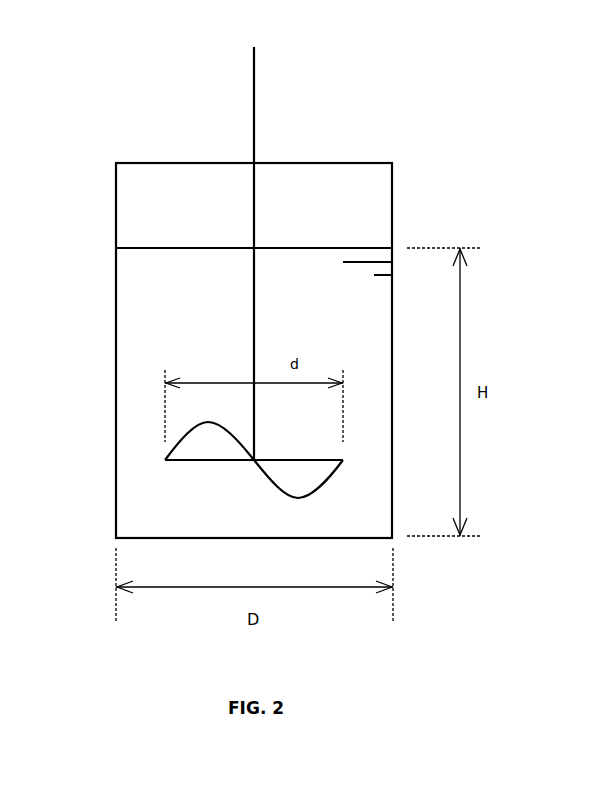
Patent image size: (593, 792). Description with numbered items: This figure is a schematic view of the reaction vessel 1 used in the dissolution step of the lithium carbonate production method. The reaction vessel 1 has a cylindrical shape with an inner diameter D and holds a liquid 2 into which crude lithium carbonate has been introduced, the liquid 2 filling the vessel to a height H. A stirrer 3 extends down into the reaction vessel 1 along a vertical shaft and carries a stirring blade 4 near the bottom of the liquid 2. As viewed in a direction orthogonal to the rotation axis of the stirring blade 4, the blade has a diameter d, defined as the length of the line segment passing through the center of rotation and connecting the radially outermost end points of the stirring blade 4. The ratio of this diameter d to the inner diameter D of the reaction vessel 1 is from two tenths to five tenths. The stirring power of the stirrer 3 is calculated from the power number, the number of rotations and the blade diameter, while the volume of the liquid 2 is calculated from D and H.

The reaction vessel 1 is at (88, 211).
The liquid 2 is at (150, 504).
The stirrer 3 is at (205, 363).
The stirring blade 4 is at (316, 479).